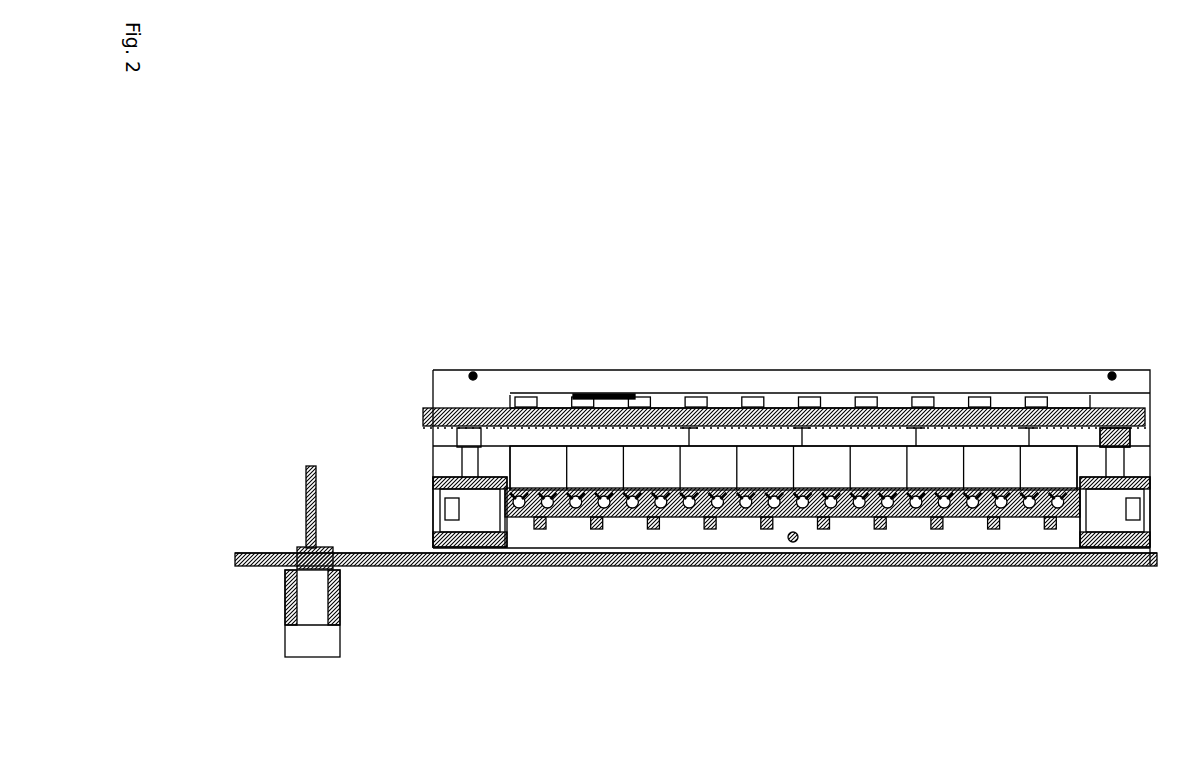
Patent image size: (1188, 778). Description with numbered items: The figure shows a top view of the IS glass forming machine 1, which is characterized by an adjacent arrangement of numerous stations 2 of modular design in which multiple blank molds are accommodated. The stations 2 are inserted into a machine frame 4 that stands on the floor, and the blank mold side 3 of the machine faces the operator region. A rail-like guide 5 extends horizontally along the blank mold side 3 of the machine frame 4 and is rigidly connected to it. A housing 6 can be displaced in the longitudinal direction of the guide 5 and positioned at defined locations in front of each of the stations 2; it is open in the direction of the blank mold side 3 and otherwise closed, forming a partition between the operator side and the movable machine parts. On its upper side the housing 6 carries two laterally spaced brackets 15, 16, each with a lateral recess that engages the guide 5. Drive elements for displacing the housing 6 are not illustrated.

The glass forming machine 1 is at (494, 322).
The stations 2 is at (592, 472).
The blank mold side 3 is at (812, 655).
The machine frame 4 is at (1072, 368).
The guide 5 is at (266, 556).
The housing 6 is at (312, 658).
The bracket 15 is at (338, 598).
The bracket 16 is at (286, 612).